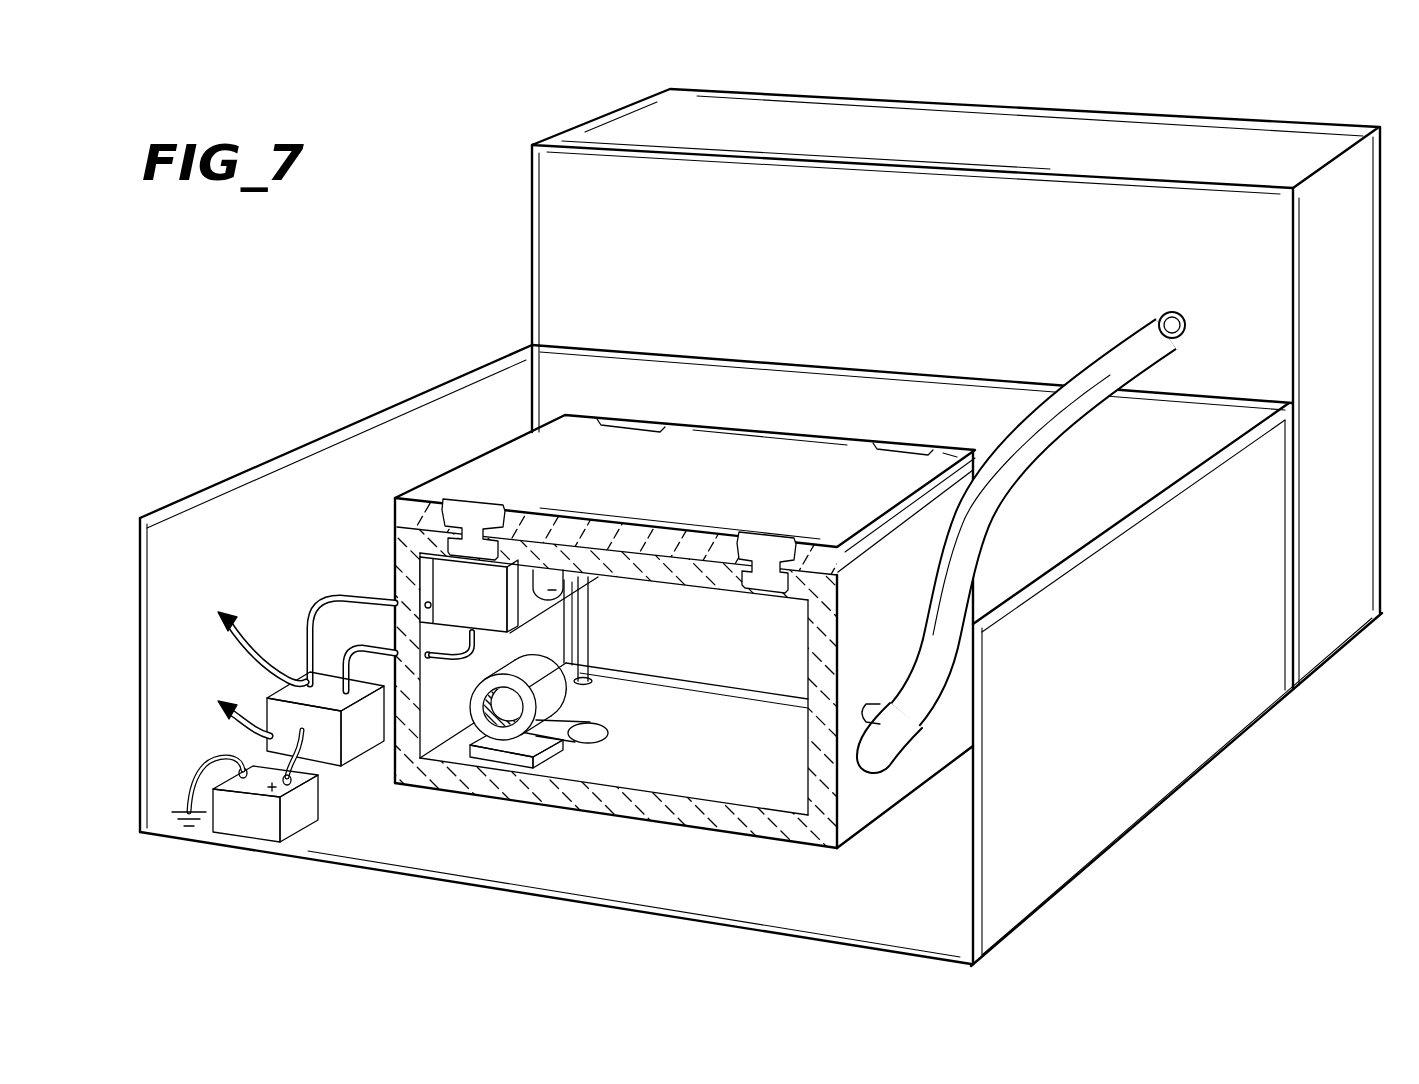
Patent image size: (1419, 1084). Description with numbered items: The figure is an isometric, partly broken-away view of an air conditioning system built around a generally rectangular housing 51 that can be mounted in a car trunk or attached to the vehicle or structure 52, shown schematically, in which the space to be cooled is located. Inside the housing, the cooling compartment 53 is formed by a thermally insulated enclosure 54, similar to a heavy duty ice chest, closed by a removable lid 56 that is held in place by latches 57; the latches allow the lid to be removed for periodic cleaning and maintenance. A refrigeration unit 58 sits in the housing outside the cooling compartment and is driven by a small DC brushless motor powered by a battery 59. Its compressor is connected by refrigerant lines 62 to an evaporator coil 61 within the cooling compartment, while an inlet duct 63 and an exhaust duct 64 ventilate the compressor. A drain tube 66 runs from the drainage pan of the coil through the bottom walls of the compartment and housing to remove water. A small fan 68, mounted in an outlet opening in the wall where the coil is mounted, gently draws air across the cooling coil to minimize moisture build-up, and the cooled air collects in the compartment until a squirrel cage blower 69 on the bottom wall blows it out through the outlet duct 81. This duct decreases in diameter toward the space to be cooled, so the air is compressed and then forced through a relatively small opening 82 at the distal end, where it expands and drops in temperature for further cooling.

The housing 51 is at (150, 510).
The vehicle or structure 52 is at (566, 249).
The cooling compartment 53 is at (708, 768).
The thermally insulated enclosure 54 is at (468, 453).
The removable lid 56 is at (740, 482).
The latches 57 is at (627, 420).
The refrigeration unit 58 is at (360, 735).
The battery 59 is at (253, 816).
The evaporator coil 61 is at (470, 596).
The lines 62 is at (380, 648).
The inlet duct 63 is at (226, 710).
The exhaust duct 64 is at (226, 622).
The drain tube 66 is at (598, 648).
The fan 68 is at (552, 592).
The squirrel cage blower 69 is at (537, 748).
The outlet duct 81 is at (1048, 432).
The opening 82 is at (1180, 338).